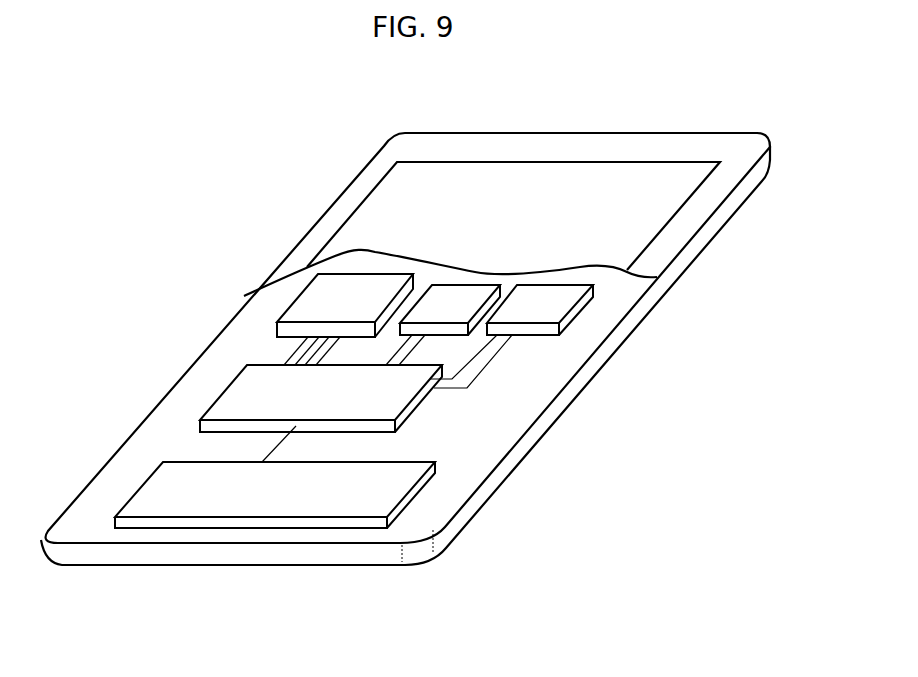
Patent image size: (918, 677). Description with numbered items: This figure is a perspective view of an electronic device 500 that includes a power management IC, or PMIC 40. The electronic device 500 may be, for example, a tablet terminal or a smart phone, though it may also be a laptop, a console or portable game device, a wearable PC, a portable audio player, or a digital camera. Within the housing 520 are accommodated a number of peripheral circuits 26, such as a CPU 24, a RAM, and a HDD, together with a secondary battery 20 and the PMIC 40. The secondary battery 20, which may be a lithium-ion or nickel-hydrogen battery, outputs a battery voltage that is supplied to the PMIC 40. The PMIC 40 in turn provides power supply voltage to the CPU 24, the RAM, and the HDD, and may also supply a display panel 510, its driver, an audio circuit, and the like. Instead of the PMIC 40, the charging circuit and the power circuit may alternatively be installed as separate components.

The electronic device 500 is at (437, 644).
The housing 520 is at (742, 144).
The display panel 510 is at (387, 204).
The CPU 24 is at (305, 312).
The peripheral circuits 26 is at (483, 295).
The PMIC 40 is at (240, 390).
The secondary battery 20 is at (385, 490).